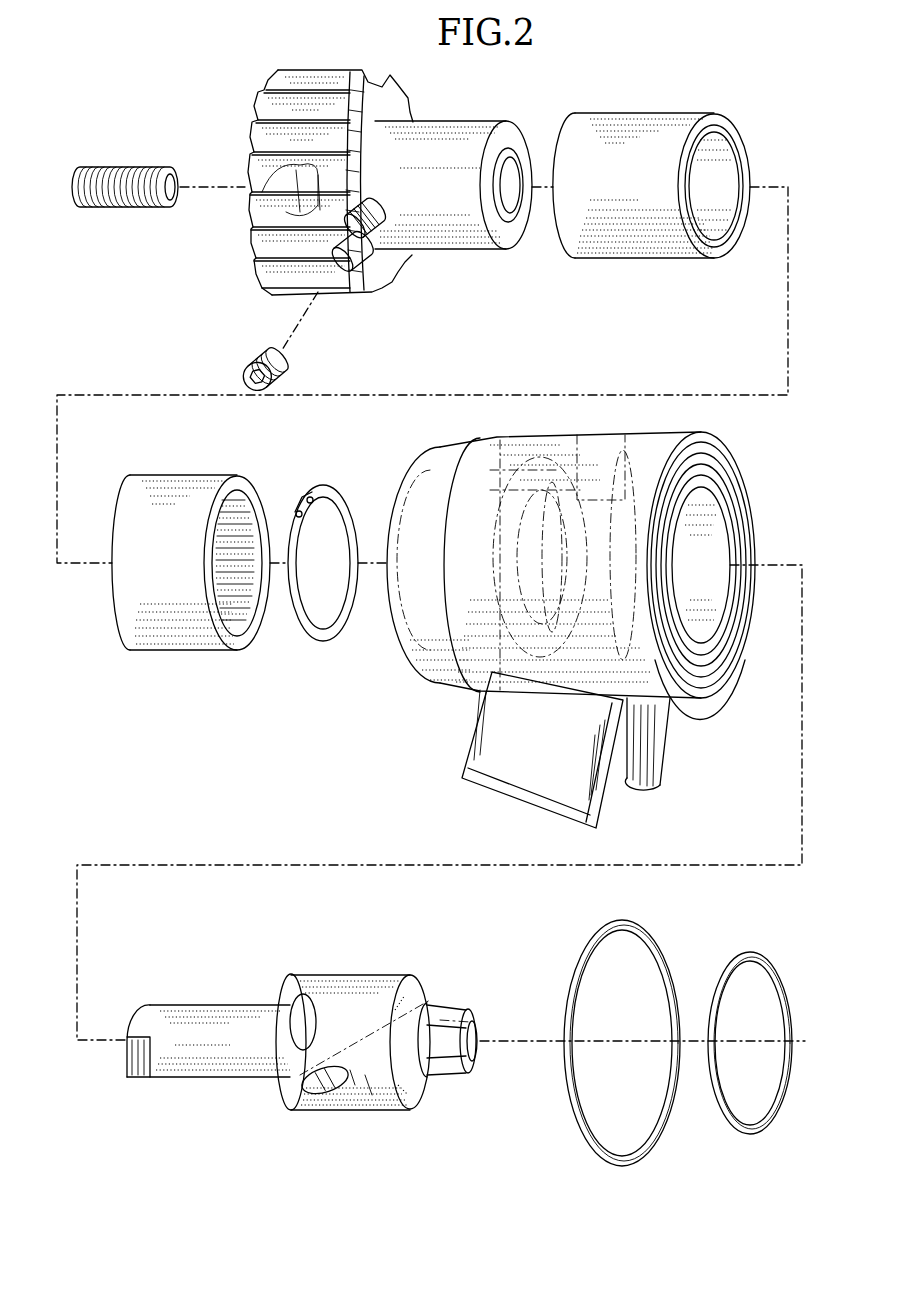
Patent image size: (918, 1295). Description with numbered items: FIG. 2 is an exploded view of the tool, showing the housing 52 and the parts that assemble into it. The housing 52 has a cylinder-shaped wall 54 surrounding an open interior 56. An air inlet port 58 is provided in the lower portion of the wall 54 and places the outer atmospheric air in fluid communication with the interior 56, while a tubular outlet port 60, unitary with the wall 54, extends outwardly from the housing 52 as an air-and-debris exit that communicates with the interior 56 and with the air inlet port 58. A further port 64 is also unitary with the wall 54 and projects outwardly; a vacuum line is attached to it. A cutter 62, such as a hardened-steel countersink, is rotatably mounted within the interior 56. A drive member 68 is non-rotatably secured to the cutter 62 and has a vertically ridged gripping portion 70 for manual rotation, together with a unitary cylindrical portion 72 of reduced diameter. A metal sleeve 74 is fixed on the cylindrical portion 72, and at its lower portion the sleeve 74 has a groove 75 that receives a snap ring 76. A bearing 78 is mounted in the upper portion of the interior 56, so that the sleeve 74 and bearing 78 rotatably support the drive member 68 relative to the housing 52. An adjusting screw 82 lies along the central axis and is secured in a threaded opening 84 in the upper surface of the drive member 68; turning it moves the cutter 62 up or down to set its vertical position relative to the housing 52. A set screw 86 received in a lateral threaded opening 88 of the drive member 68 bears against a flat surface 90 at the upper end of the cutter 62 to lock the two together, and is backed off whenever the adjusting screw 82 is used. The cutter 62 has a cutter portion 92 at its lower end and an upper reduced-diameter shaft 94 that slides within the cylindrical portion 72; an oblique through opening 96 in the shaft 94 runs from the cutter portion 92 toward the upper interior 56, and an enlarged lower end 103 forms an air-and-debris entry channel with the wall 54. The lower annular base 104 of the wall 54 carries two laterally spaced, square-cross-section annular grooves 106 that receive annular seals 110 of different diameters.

The housing 52 is at (600, 579).
The wall 54 is at (447, 695).
The open interior 56 is at (720, 540).
The air inlet port 58 is at (612, 433).
The outlet port 60 is at (460, 770).
The cutter 62 is at (317, 1047).
The port 64 is at (662, 770).
The drive member 68 is at (357, 217).
The gripping portion 70 is at (288, 88).
The cylindrical portion 72 is at (455, 250).
The sleeve 74 is at (664, 167).
The groove 75 is at (705, 122).
The snap ring 76 is at (318, 635).
The bearing 78 is at (187, 652).
The adjusting screw 82 is at (178, 145).
The threaded opening 84 is at (245, 200).
The set screw 86 is at (284, 372).
The lateral threaded opening 88 is at (372, 262).
The flat surface 90 is at (140, 1080).
The cutter portion 92 is at (445, 1012).
The shaft 94 is at (215, 1005).
The through opening 96 is at (360, 1100).
The enlarged lower end 103 is at (382, 1106).
The base 104 is at (728, 680).
The annular grooves 106 is at (725, 452).
The annular seals 110 is at (665, 950).